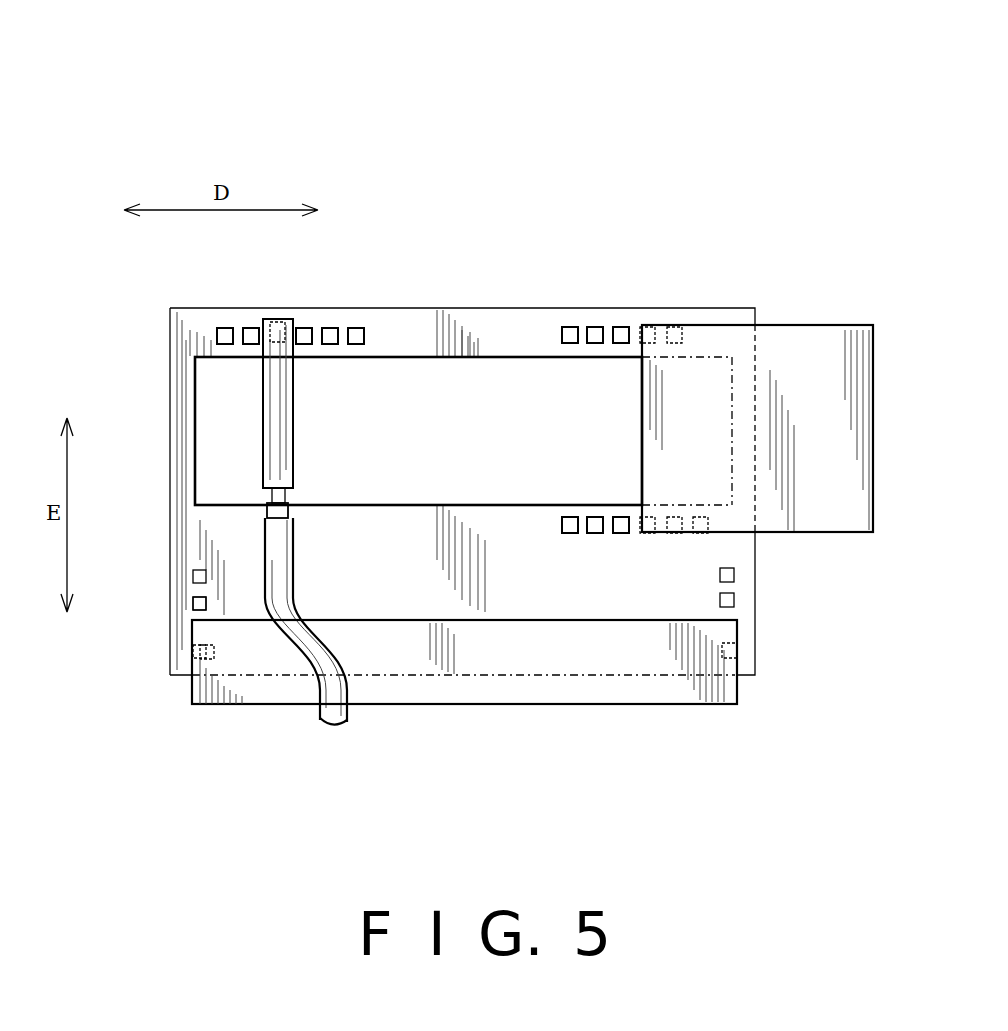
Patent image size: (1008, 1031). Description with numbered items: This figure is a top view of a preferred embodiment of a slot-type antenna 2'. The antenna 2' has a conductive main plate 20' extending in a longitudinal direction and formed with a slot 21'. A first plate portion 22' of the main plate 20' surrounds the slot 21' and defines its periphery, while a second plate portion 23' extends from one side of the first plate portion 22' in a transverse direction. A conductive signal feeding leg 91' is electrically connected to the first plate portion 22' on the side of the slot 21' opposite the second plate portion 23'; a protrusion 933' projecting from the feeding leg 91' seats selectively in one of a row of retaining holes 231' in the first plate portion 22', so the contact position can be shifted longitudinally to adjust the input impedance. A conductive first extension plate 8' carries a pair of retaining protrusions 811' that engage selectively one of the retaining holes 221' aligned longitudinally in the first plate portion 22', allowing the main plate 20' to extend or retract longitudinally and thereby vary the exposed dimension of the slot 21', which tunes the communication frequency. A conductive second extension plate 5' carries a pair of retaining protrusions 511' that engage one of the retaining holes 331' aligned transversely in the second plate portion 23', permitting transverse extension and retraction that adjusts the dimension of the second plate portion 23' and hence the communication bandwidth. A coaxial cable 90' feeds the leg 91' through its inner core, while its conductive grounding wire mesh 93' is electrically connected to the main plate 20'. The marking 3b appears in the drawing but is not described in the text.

The slot-type antenna 2' is at (465, 102).
The conductive main plate 20' is at (417, 491).
The slot 21' is at (418, 391).
The first plate portion 22' is at (418, 388).
The second plate portion 23' is at (464, 613).
The retaining holes 231' is at (300, 302).
The retaining holes 221' is at (595, 394).
The retaining holes 331' is at (153, 595).
The conductive first extension plate 8' is at (757, 398).
The retaining protrusions 811' is at (682, 396).
The conductive signal feeding leg 91' is at (205, 411).
The protrusion 933' is at (231, 301).
The conductive grounding wire mesh 93' is at (310, 497).
The coaxial cable 90' is at (296, 632).
The conductive second extension plate 5' is at (464, 678).
The retaining protrusions 511' is at (514, 657).
The direction indicator 3b is at (757, 806).